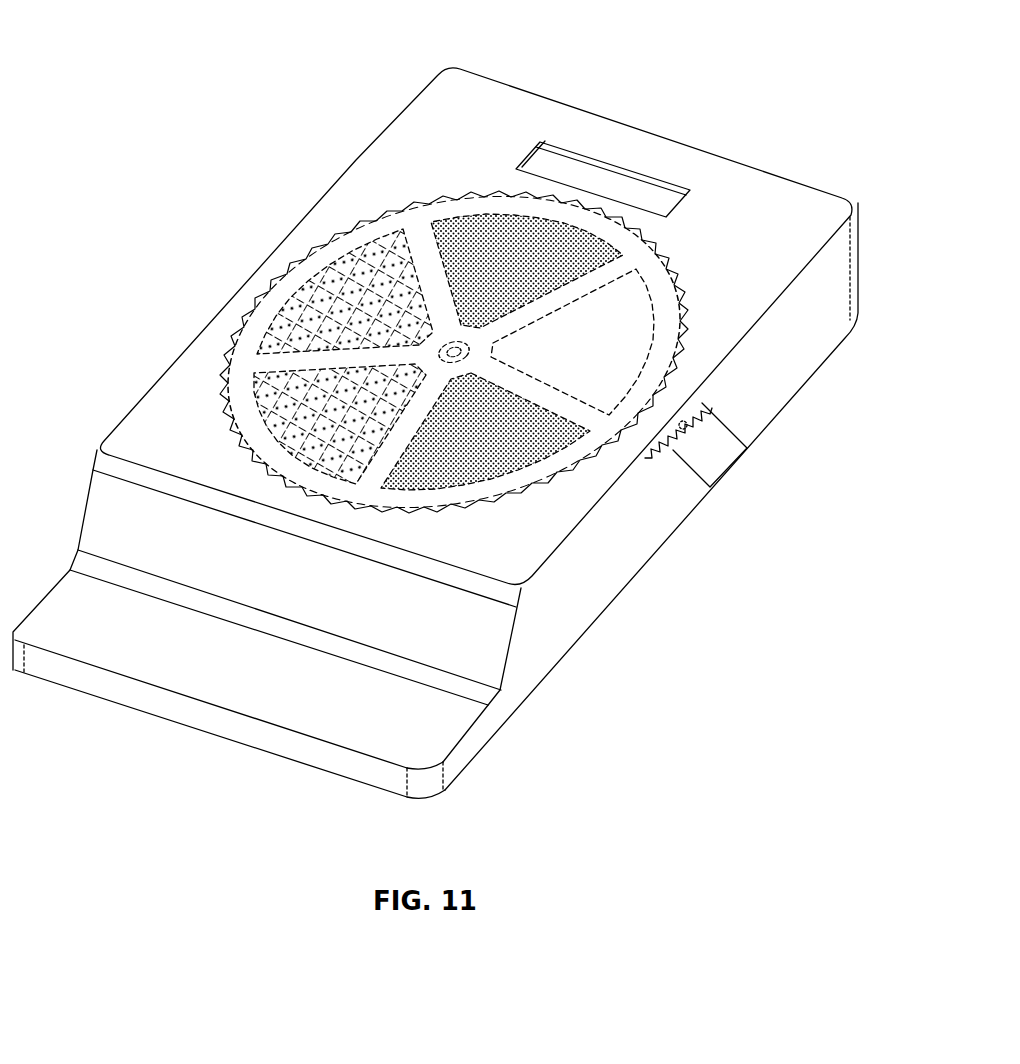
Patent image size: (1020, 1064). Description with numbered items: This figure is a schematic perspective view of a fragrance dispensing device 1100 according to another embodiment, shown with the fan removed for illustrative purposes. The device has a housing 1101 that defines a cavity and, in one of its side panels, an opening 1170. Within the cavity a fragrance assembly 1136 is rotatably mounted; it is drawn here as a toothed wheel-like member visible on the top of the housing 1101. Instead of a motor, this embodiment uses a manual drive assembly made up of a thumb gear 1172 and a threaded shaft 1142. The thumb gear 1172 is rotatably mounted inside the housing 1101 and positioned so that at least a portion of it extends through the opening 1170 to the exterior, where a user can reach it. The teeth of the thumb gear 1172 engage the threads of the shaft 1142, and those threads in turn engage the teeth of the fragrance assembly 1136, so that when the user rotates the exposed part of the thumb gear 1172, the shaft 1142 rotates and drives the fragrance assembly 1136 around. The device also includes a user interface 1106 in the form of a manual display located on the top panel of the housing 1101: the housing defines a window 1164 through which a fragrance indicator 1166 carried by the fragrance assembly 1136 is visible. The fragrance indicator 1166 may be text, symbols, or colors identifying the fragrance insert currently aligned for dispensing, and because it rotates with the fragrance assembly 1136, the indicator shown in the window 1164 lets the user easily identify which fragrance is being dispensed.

The fragrance dispensing device 1100 is at (180, 52).
The housing 1101 is at (740, 134).
The user interface 1106 is at (585, 143).
The window 1164 is at (557, 140).
The fragrance indicator 1166 is at (620, 167).
The fragrance assembly 1136 is at (680, 270).
The threaded shaft 1142 is at (660, 378).
The opening 1170 is at (705, 486).
The thumb gear 1172 is at (720, 430).